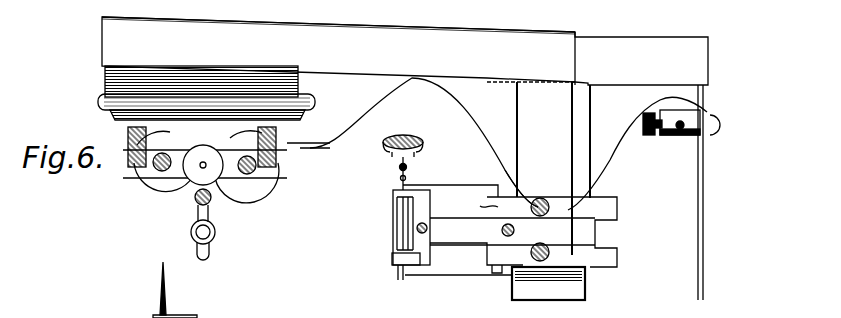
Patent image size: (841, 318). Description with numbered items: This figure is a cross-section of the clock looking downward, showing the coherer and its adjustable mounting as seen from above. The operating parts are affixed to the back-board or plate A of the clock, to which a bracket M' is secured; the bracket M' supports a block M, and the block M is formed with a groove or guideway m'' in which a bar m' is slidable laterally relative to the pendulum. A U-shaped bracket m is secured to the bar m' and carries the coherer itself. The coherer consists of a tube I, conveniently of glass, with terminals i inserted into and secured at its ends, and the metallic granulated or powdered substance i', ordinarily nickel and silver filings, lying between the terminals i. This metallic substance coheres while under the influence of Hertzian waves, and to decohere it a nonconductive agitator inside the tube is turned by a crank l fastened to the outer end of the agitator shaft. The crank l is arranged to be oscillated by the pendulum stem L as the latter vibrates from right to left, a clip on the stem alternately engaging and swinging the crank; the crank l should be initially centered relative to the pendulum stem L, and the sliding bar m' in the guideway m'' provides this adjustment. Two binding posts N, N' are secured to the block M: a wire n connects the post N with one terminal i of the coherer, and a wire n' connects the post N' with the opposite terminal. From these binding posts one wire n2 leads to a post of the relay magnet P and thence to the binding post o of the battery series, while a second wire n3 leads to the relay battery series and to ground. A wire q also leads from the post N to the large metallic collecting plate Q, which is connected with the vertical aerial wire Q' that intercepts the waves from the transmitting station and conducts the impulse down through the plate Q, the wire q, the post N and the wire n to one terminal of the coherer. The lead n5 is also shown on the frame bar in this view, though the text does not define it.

The back-board or plate A is at (612, 46).
The spring arm n5 is at (360, 24).
The binding post o is at (308, 139).
The relay magnet P is at (205, 193).
The wire n2 is at (488, 157).
The wire n is at (475, 190).
The pendulum stem L is at (403, 134).
The metallic granulated or powdered substance i' is at (385, 204).
The terminals i is at (393, 171).
The tube I is at (393, 228).
The U-shaped bracket m is at (450, 198).
The bar m' is at (512, 241).
The wire n' is at (459, 281).
The bracket M' is at (553, 168).
The wire n3 is at (572, 152).
The binding post N is at (546, 193).
The binding post N' is at (546, 242).
The groove or guideway m'' is at (568, 232).
The block M is at (572, 279).
The wire q is at (614, 152).
The vertical wire Q' is at (681, 139).
The metallic collecting plate Q is at (710, 192).
The crank l is at (161, 290).